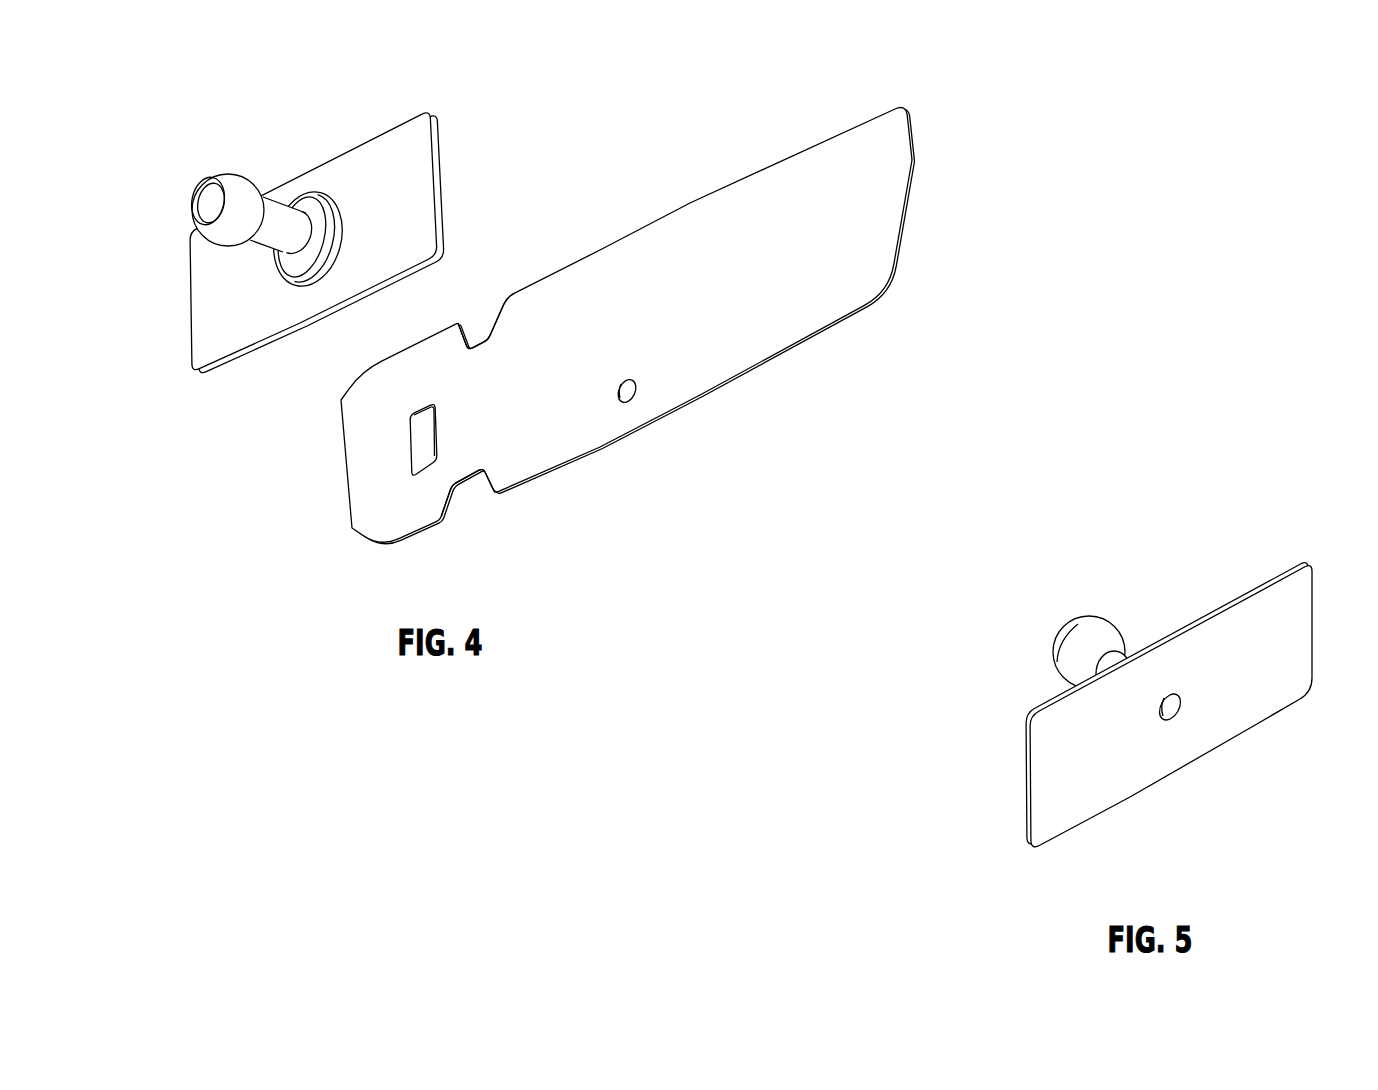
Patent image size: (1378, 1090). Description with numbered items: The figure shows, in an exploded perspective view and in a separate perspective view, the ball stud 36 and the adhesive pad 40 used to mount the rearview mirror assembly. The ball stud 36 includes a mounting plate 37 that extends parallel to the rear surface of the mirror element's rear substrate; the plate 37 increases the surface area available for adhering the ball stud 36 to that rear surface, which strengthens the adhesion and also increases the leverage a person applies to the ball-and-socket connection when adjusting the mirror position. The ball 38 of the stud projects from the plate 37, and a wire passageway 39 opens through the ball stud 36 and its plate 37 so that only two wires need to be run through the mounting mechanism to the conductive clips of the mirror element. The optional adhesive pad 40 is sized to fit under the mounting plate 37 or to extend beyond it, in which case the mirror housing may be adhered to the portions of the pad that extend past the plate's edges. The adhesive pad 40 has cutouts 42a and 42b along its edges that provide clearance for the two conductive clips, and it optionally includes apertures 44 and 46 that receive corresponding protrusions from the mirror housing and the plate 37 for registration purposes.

In FIG. 4, the ball stud 36 is at (275, 210).
In FIG. 5, the ball stud 36 is at (1106, 662).
In FIG. 4, the mounting plate 37 is at (385, 150).
In FIG. 5, the mounting plate 37 is at (1283, 572).
In FIG. 4, the ball 38 is at (244, 196).
In FIG. 5, the ball 38 is at (1093, 627).
In FIG. 4, the wire passageway 39 is at (213, 197).
In FIG. 5, the wire passageway 39 is at (1172, 707).
In FIG. 4, the adhesive pad 40 is at (855, 150).
In FIG. 4, the cutout 42a is at (480, 330).
In FIG. 4, the cutout 42b is at (472, 492).
In FIG. 4, the aperture 44 is at (427, 442).
In FIG. 4, the aperture 46 is at (621, 395).